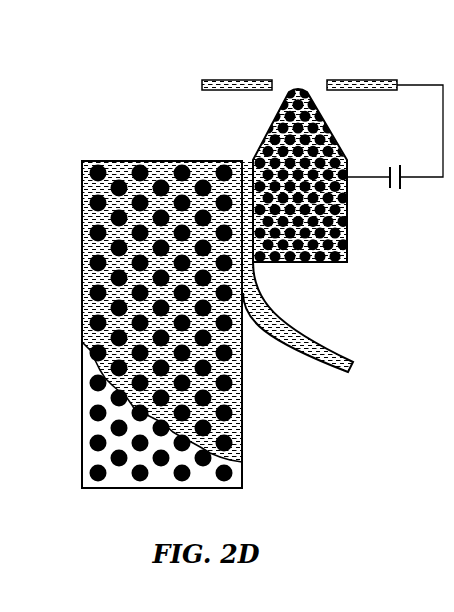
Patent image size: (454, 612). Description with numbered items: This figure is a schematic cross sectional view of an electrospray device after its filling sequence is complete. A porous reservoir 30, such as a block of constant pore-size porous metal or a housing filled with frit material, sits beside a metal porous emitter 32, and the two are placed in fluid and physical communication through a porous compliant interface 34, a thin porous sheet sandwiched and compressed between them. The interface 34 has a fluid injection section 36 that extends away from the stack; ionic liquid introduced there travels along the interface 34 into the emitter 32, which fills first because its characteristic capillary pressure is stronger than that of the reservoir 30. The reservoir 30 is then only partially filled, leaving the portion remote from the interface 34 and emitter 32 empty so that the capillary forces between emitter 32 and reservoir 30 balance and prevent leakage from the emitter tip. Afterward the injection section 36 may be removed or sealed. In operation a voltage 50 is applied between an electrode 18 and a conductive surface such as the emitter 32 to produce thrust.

The electrode 18 is at (212, 80).
The porous reservoir 30 is at (92, 423).
The porous emitter 32 is at (334, 243).
The porous compliant interface 34 is at (251, 160).
The fluid injection section 36 is at (297, 92).
The voltage 50 is at (390, 163).